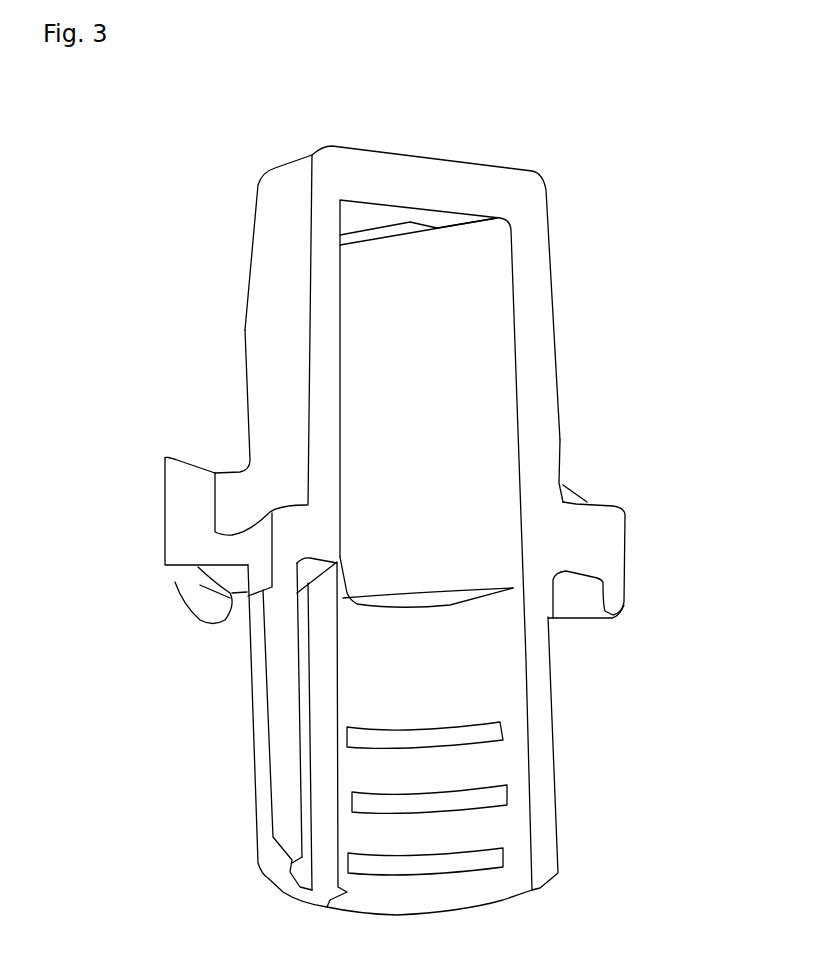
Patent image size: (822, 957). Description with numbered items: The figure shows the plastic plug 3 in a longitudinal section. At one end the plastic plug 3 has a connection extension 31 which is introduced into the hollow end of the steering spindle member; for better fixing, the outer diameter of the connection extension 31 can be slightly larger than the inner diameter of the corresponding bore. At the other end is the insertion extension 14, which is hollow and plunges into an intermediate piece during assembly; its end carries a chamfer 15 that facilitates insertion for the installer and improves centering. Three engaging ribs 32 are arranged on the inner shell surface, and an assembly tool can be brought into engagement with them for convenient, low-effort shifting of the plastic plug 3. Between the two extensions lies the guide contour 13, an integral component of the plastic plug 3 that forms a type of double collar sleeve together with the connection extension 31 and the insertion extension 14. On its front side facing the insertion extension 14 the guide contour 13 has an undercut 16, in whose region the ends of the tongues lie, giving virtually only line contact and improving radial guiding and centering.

The plastic plug 3 is at (423, 146).
The connection extension 31 is at (550, 262).
The insertion extension 14 is at (552, 685).
The guide contour 13 is at (167, 565).
The undercut 16 is at (233, 606).
The engaging ribs 32 is at (495, 798).
The chamfer 15 is at (550, 888).